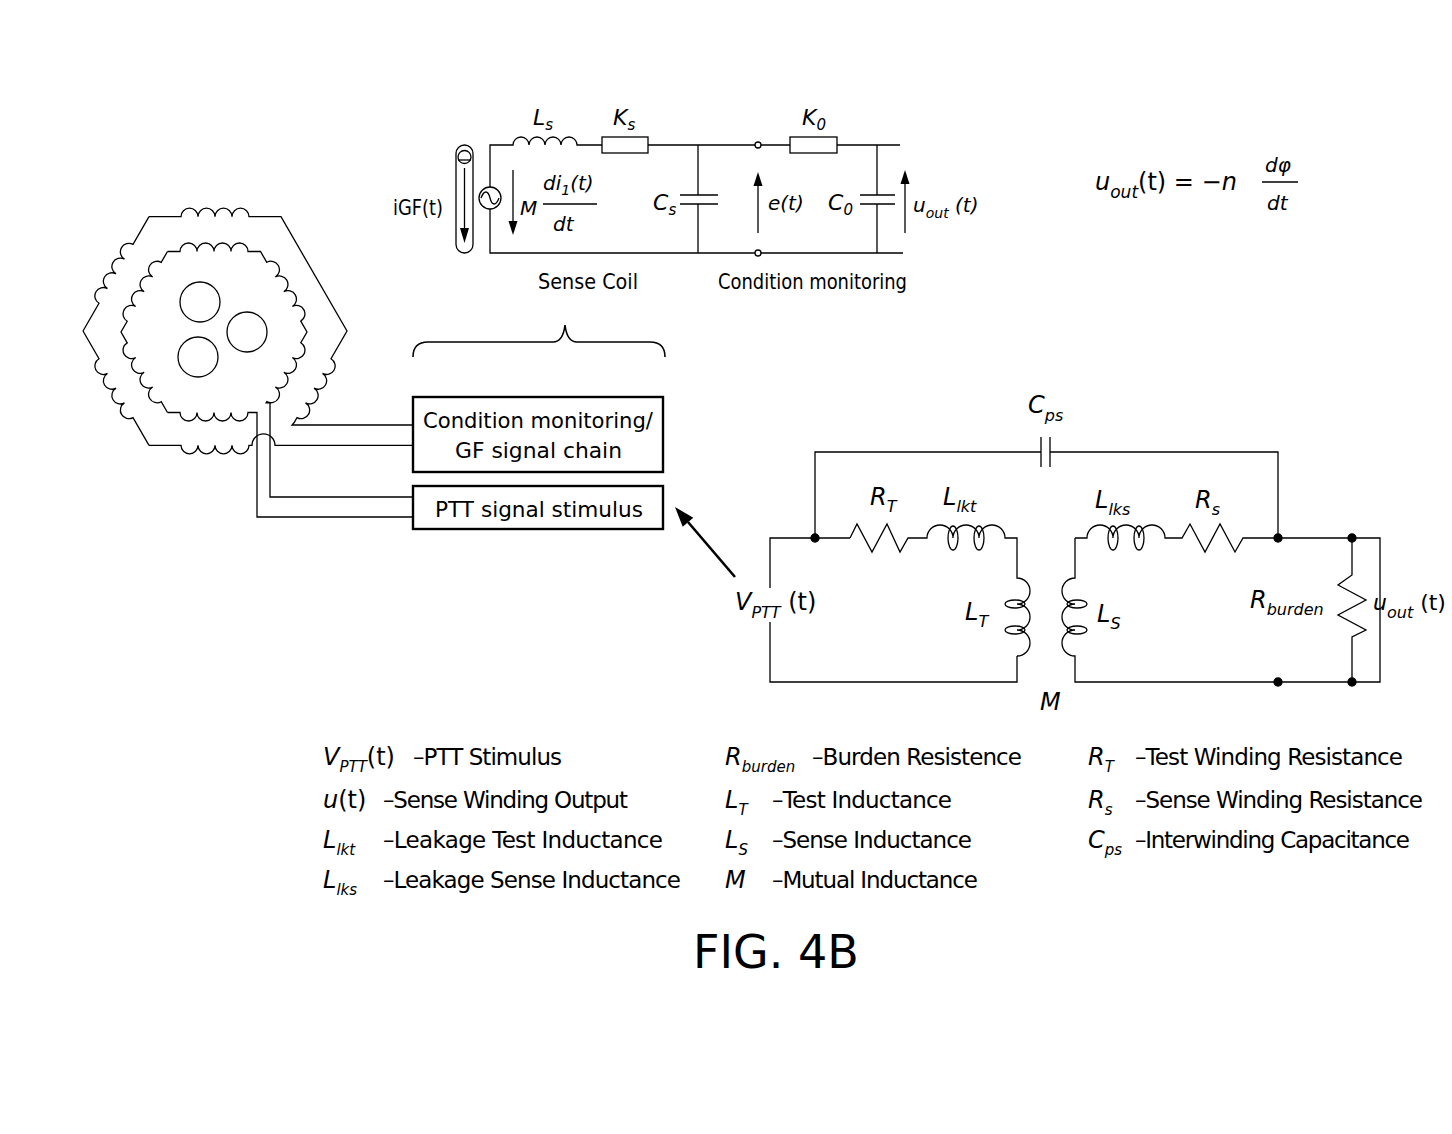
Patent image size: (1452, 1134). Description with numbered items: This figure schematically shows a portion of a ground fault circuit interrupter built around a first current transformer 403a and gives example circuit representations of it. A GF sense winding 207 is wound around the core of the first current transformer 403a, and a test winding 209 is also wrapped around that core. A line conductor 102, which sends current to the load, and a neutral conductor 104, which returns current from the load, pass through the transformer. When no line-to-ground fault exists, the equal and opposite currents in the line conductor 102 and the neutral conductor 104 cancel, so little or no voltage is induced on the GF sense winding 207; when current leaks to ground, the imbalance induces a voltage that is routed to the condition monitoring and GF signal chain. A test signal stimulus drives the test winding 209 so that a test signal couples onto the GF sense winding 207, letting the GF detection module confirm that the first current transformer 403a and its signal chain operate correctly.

The first current transformer 403a is at (250, 112).
The GF sense winding 207 is at (302, 228).
The test winding 209 is at (160, 232).
The line conductor 102 is at (203, 300).
The neutral conductor 104 is at (196, 368).